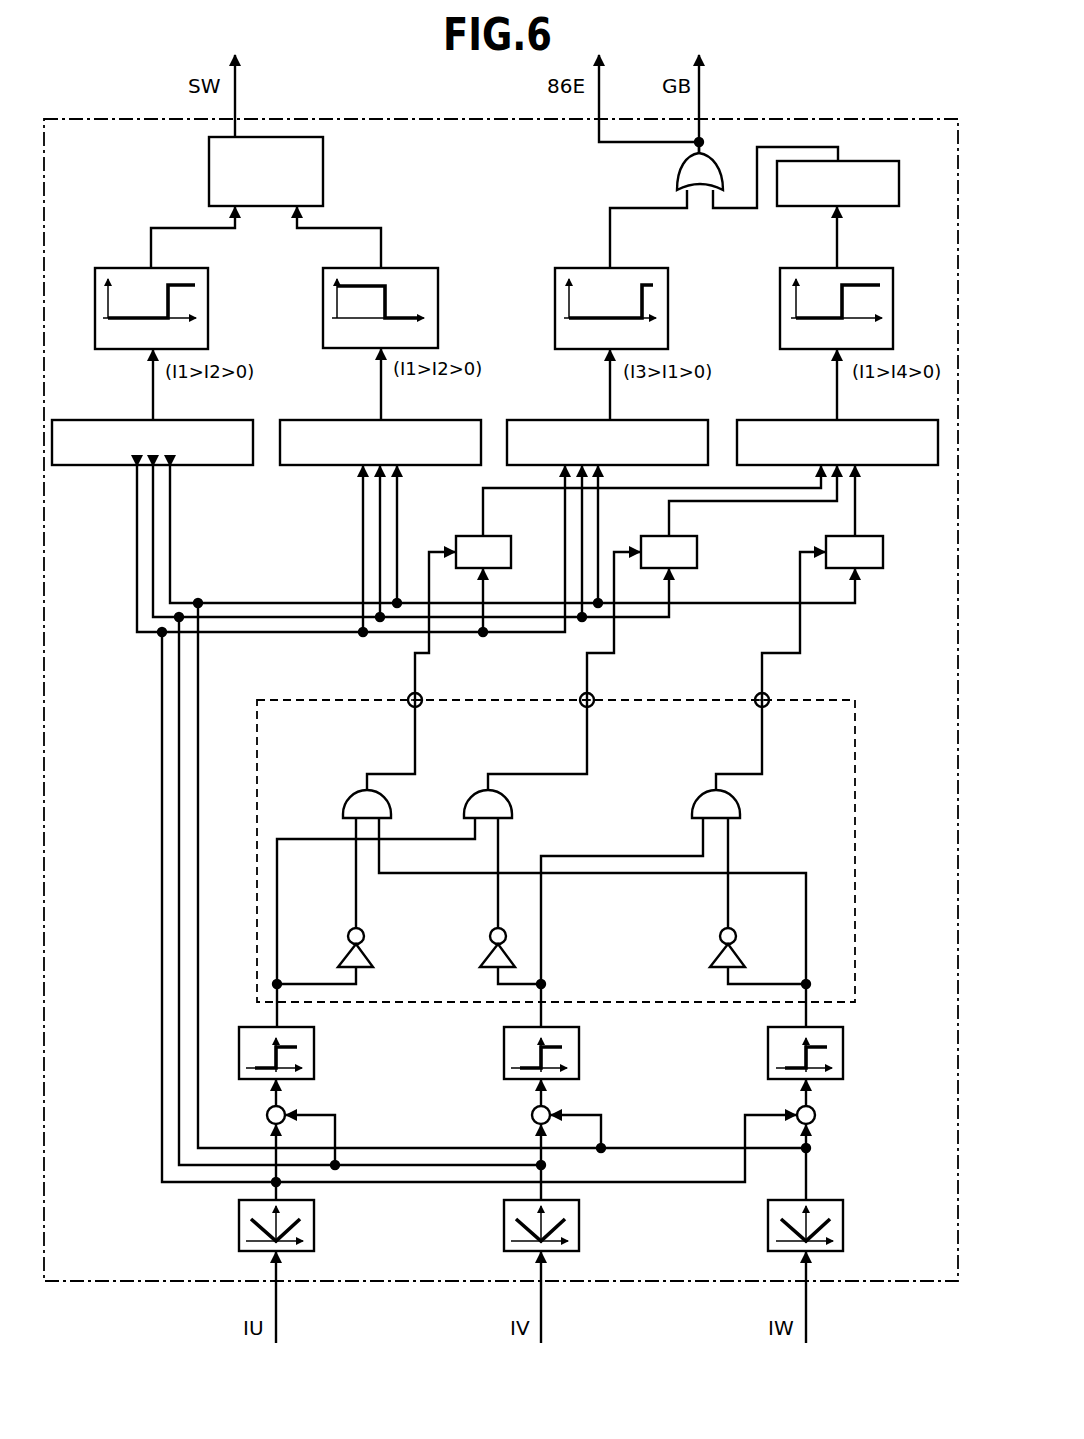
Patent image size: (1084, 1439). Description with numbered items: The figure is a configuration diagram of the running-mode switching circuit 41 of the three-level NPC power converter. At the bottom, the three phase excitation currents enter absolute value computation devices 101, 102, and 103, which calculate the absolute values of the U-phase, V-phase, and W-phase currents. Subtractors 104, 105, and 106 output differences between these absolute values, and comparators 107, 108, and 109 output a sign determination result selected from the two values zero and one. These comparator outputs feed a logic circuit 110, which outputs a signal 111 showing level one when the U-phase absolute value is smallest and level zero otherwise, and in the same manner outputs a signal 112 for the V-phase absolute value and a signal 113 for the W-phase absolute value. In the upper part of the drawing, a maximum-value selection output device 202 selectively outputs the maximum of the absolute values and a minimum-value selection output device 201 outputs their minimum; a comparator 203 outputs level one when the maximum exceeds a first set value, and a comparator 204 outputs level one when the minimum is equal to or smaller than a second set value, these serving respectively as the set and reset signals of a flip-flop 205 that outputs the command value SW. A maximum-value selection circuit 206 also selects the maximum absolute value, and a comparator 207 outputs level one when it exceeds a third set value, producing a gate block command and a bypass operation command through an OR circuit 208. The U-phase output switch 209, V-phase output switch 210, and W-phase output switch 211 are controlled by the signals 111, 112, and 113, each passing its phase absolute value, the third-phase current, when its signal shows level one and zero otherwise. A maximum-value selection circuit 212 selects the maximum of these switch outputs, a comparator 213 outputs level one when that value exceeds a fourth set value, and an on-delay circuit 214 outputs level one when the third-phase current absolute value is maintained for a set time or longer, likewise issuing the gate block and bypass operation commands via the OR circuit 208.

The running-mode switching circuit 41 is at (846, 119).
The absolute value computation device 101 is at (315, 1222).
The absolute value computation device 102 is at (580, 1222).
The absolute value computation device 103 is at (844, 1222).
The subtractor 104 is at (267, 1110).
The subtractor 105 is at (532, 1110).
The subtractor 106 is at (815, 1110).
The comparator 107 is at (315, 1040).
The comparator 108 is at (580, 1040).
The comparator 109 is at (844, 1040).
The logic circuit 110 is at (300, 700).
The signal 111 is at (421, 696).
The signal 112 is at (593, 696).
The signal 113 is at (768, 696).
The minimum-value selection output device 201 is at (422, 402).
The maximum-value selection output device 202 is at (194, 402).
The comparator 203 is at (177, 249).
The comparator 204 is at (404, 249).
The flip-flop 205 is at (324, 150).
The maximum-value selection circuit 206 is at (654, 402).
The comparator 207 is at (636, 249).
The OR circuit 208 is at (677, 182).
The U-phase output switch 209 is at (501, 521).
The V-phase output switch 210 is at (686, 521).
The W-phase output switch 211 is at (871, 521).
The maximum-value selection circuit 212 is at (884, 402).
The comparator 213 is at (862, 249).
The on-delay circuit 214 is at (861, 144).